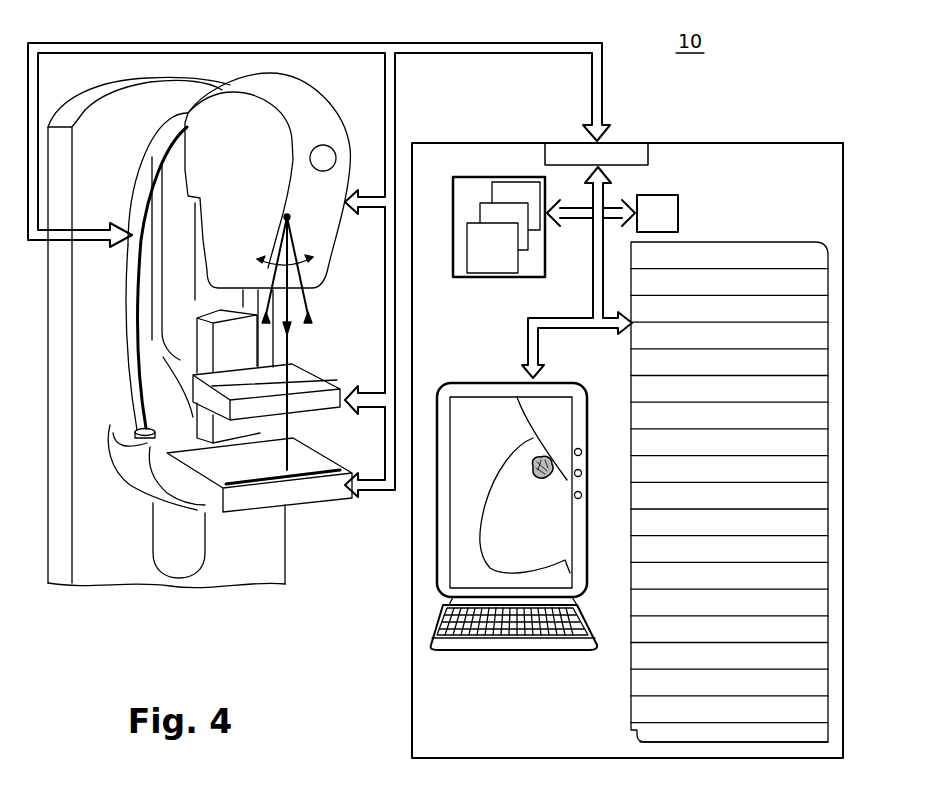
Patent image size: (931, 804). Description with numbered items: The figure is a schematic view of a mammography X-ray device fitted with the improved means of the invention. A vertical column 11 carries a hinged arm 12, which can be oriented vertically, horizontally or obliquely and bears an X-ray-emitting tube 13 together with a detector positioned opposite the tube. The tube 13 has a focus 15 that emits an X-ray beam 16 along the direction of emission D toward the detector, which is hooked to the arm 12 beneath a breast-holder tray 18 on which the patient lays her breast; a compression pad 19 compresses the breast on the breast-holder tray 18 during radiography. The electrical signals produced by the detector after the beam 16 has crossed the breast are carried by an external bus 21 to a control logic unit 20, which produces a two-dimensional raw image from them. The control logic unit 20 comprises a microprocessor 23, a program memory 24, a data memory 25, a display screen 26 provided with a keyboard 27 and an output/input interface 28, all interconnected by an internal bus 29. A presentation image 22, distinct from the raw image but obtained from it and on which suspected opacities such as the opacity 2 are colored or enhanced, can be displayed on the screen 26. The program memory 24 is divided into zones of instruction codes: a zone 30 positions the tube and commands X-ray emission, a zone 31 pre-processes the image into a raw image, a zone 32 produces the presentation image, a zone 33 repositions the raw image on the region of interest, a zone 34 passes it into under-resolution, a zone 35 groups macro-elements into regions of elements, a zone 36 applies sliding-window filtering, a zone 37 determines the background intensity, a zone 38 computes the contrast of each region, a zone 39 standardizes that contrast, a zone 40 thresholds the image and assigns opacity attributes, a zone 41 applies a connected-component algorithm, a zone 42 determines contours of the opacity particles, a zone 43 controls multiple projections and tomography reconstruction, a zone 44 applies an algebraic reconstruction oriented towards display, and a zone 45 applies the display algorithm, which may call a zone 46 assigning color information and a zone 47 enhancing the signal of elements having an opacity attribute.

The opacity 2 is at (538, 458).
The vertical column 11 is at (248, 553).
The hinged arm 12 is at (177, 285).
The X-ray-emitting tube 13 is at (317, 124).
The focus 15 is at (292, 219).
The X-ray beam 16 is at (292, 268).
The breast-holder tray 18 is at (305, 453).
The compression pad 19 is at (303, 372).
The control logic unit 20 is at (430, 680).
The external bus 21 is at (533, 48).
The presentation image 22 is at (528, 467).
The microprocessor 23 is at (671, 195).
The program memory 24 is at (684, 735).
The data memory 25 is at (477, 183).
The display screen 26 is at (588, 513).
The keyboard 27 is at (443, 612).
The output/input interface 28 is at (626, 143).
The internal bus 29 is at (594, 293).
The zone 30 is at (812, 248).
The zone 31 is at (812, 280).
The zone 32 is at (812, 307).
The zone 33 is at (812, 334).
The zone 34 is at (812, 360).
The zone 35 is at (812, 387).
The zone 36 is at (812, 414).
The zone 37 is at (812, 440).
The zone 38 is at (812, 467).
The zone 39 is at (812, 494).
The zone 40 is at (812, 521).
The zone 41 is at (814, 548).
The zone 42 is at (812, 574).
The zone 43 is at (812, 601).
The zone 44 is at (812, 627).
The zone 45 is at (631, 658).
The zone 46 is at (631, 688).
The zone 47 is at (778, 715).
The direction of emission D is at (322, 307).